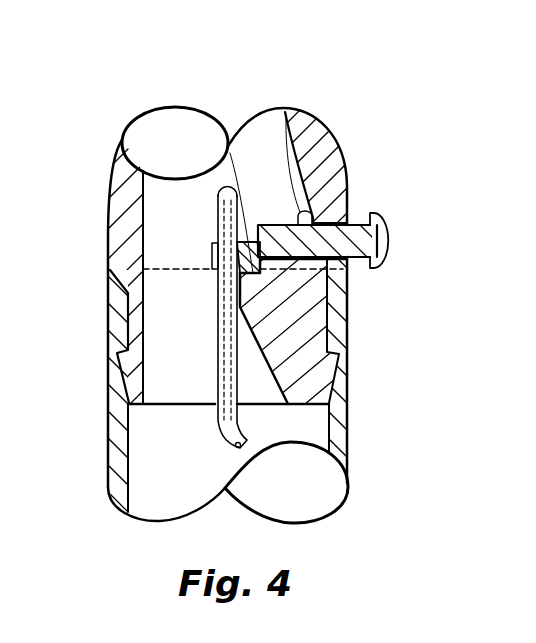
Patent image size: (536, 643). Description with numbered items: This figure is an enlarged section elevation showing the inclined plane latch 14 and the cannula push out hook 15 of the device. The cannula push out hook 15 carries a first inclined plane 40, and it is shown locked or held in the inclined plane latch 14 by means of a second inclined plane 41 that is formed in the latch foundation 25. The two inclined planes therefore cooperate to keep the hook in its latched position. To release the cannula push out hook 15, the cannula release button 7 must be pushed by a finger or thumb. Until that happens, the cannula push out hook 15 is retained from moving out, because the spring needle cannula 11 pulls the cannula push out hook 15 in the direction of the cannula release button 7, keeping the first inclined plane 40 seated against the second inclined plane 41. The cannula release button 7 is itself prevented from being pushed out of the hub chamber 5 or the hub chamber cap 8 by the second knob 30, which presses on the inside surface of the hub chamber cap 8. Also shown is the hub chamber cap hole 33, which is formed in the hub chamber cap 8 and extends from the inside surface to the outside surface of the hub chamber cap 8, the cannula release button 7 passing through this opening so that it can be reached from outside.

The hub chamber 5 is at (182, 433).
The cannula release button 7 is at (358, 258).
The hub chamber cap 8 is at (342, 158).
The spring needle cannula 11 is at (238, 297).
The inclined plane latch 14 is at (250, 268).
The cannula push out hook 15 is at (225, 150).
The latch foundation 25 is at (263, 348).
The second knob 30 is at (286, 112).
The hub chamber cap hole 33 is at (343, 226).
The first inclined plane 40 is at (255, 242).
The second inclined plane 41 is at (255, 272).